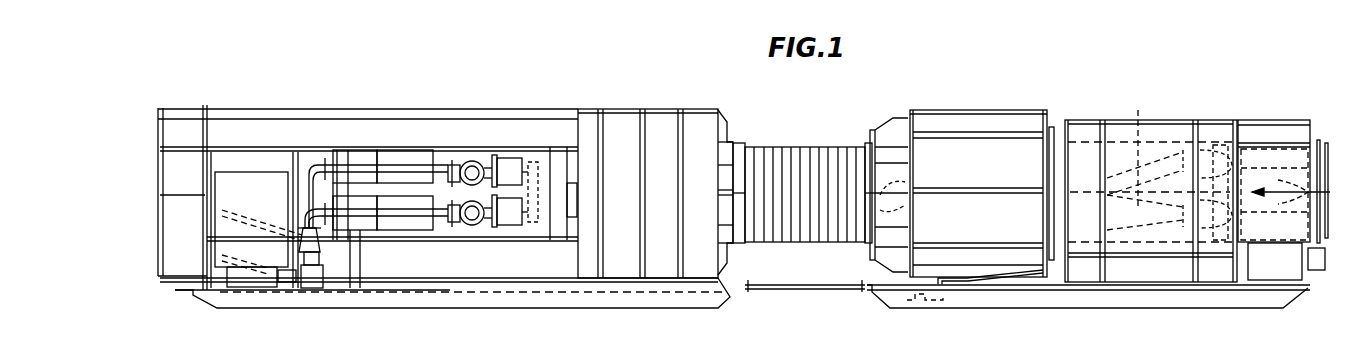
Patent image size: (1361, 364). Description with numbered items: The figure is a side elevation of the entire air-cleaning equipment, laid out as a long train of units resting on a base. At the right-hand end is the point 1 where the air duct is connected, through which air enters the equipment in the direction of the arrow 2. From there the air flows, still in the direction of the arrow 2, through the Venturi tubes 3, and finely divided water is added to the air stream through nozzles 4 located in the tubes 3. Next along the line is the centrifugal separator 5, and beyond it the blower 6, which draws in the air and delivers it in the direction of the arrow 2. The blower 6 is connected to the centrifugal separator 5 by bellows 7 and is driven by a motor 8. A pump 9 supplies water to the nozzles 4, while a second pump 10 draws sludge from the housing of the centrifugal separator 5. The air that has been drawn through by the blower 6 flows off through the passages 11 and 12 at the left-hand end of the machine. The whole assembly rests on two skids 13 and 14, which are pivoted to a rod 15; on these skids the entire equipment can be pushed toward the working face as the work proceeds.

The air duct connection point 1 is at (1323, 140).
The arrow 2 is at (1258, 190).
The Venturi tubes 3 is at (1127, 160).
The nozzles 4 is at (1230, 160).
The centrifugal separator 5 is at (970, 108).
The blower 6 is at (635, 107).
The bellows 7 is at (800, 153).
The motor 8 is at (405, 158).
The pump 9 is at (360, 160).
The pump 10 is at (360, 238).
The passage 11 is at (303, 132).
The passage 12 is at (420, 262).
The skid 13 is at (1138, 307).
The skid 14 is at (562, 308).
The rod 15 is at (810, 290).